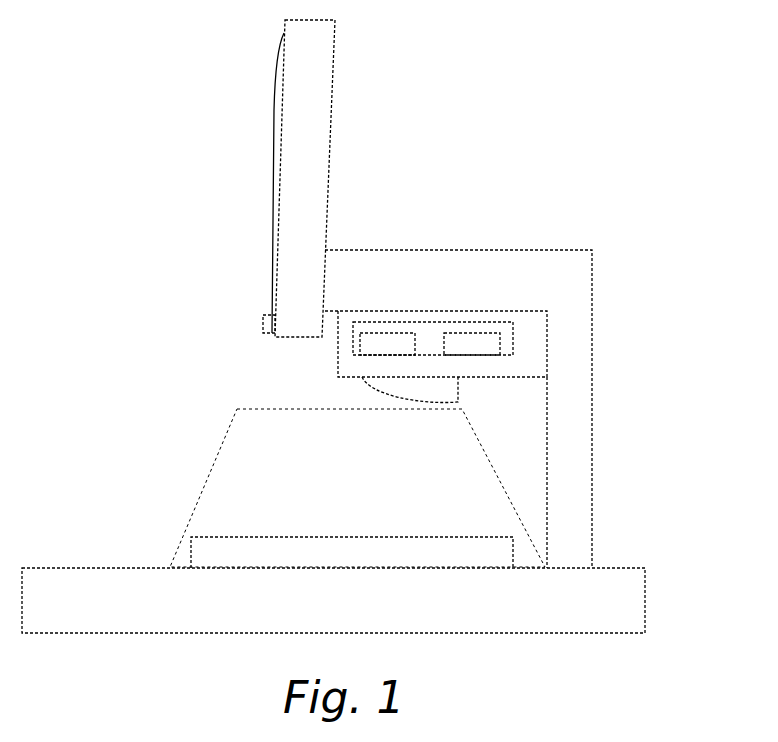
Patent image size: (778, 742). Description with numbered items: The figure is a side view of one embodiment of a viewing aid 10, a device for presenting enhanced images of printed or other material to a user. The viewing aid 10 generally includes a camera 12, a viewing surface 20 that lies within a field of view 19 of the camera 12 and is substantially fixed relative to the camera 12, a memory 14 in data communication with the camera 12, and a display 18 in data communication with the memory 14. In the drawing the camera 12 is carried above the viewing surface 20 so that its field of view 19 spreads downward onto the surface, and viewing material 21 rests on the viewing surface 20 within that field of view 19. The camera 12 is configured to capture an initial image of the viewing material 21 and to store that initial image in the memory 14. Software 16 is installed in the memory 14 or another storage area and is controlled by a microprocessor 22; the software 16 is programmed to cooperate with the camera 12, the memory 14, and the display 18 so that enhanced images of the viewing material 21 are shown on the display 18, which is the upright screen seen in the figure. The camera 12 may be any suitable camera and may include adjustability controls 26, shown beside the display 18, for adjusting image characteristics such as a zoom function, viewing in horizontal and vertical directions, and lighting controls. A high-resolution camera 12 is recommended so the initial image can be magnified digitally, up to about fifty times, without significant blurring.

The viewing aid 10 is at (660, 163).
The camera 12 is at (338, 373).
The memory 14 is at (398, 332).
The software 16 is at (482, 333).
The display 18 is at (273, 215).
The field of view 19 is at (528, 537).
The viewing surface 20 is at (72, 568).
The viewing material 21 is at (455, 537).
The microprocessor 22 is at (513, 342).
The adjustability controls 26 is at (263, 325).